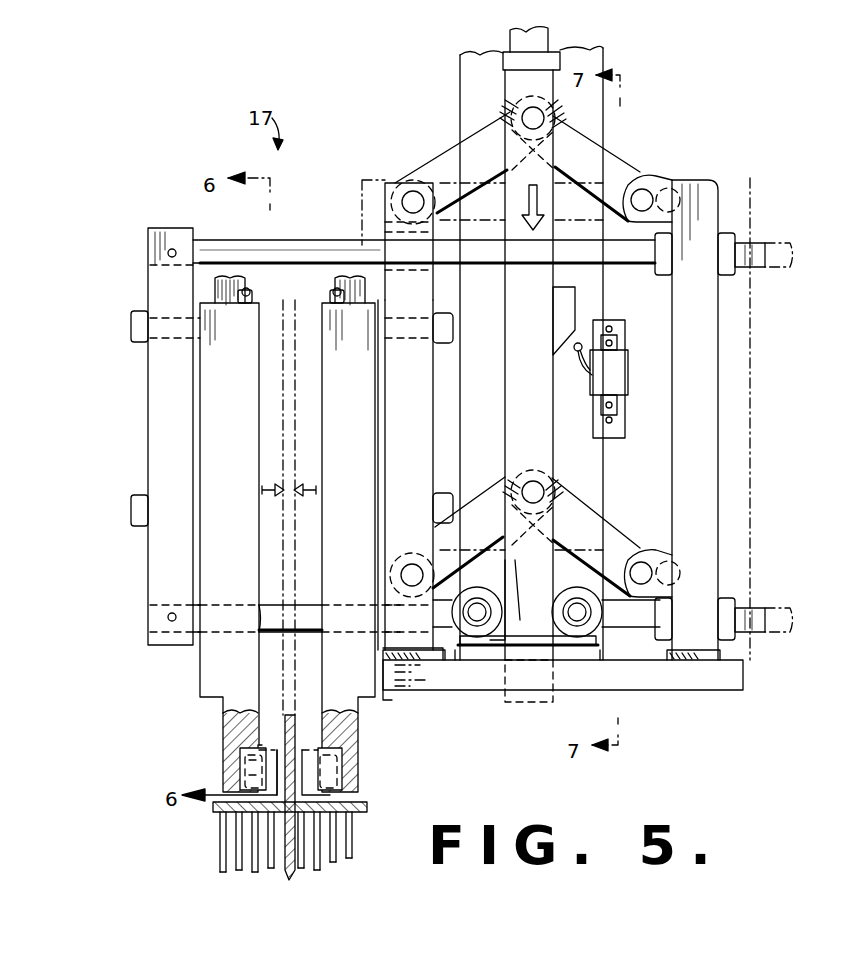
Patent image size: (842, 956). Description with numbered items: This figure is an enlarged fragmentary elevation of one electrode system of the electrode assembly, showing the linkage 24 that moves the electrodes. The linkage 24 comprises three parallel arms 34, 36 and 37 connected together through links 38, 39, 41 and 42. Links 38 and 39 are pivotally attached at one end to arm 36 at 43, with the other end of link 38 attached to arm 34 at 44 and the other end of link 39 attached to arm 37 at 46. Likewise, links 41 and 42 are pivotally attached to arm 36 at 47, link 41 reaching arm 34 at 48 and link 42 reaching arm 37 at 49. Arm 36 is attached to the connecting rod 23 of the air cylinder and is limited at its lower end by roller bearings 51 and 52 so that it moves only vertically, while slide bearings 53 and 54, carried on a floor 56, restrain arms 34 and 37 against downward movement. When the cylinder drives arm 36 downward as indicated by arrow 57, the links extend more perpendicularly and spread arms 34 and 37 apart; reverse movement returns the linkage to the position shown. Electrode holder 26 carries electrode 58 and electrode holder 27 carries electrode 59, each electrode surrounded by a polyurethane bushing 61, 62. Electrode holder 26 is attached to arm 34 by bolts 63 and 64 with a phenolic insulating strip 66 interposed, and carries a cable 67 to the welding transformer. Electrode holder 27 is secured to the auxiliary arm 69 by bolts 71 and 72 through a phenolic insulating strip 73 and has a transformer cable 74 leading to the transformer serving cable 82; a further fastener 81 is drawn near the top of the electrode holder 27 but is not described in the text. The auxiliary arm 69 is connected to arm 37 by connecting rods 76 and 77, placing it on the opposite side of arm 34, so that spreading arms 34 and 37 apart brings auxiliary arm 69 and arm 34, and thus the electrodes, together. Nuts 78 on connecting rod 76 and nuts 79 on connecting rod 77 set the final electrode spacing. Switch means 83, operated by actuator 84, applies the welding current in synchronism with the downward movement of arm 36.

The connecting rod 23 is at (512, 40).
The linkage 24 is at (430, 124).
The electrode holder 26 is at (360, 692).
The electrode holder 27 is at (198, 675).
The arm 34 is at (388, 178).
The arm 36 is at (506, 297).
The arm 37 is at (712, 178).
The link 38 is at (445, 152).
The link 39 is at (640, 152).
The link 41 is at (495, 492).
The link 42 is at (628, 518).
The pivot attachment 43 is at (540, 112).
The pivot attachment 44 is at (410, 190).
The pivot attachment 46 is at (645, 190).
The pivot attachment 47 is at (542, 490).
The pivot attachment 48 is at (412, 565).
The pivot attachment 49 is at (648, 560).
The roller bearing 51 is at (475, 638).
The roller bearing 52 is at (577, 638).
The slide bearing 53 is at (418, 665).
The slide bearing 54 is at (712, 680).
The floor 56 is at (646, 680).
The arrow 57 is at (548, 207).
The electrode 58 is at (345, 775).
The electrode 59 is at (240, 768).
The polyurethane bushing 61 is at (340, 760).
The polyurethane bushing 62 is at (245, 752).
The bolt 63 is at (456, 338).
The bolt 64 is at (437, 498).
The phenolic insulating strip 66 is at (388, 400).
The cable 67 is at (345, 276).
The auxiliary arm 69 is at (148, 425).
The bolt 71 is at (132, 340).
The bolt 72 is at (133, 497).
The phenolic insulating strip 73 is at (193, 578).
The transformer cable 74 is at (232, 275).
The connecting rod 76 is at (282, 240).
The connecting rod 77 is at (268, 605).
The nuts 78 is at (716, 275).
The nuts 79 is at (716, 605).
The right finger screw 81 is at (330, 292).
The cable 82 is at (249, 296).
The switch means 83 is at (622, 356).
The actuator 84 is at (575, 308).